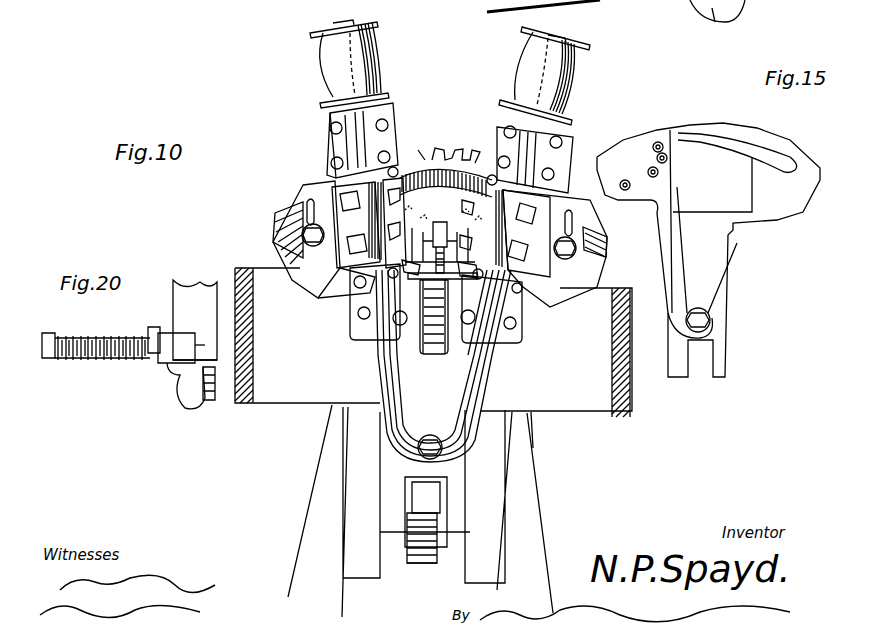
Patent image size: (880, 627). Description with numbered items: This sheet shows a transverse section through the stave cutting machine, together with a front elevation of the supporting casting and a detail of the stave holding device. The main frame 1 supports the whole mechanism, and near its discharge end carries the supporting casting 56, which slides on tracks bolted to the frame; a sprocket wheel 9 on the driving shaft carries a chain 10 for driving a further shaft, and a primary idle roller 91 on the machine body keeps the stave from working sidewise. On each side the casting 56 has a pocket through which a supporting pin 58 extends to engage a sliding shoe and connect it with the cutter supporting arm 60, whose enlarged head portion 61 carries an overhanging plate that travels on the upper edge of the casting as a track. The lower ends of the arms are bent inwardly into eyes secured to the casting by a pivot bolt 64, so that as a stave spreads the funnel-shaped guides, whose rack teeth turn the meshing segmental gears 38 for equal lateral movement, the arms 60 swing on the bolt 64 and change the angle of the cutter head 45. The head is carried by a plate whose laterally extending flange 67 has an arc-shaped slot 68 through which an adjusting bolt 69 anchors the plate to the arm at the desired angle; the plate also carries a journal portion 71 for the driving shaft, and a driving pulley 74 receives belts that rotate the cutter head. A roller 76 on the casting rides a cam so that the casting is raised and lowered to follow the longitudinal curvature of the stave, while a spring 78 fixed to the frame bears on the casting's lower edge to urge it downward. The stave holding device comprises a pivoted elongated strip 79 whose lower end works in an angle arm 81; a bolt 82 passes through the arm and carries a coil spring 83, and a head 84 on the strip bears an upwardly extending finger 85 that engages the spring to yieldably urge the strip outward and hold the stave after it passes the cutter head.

In FIG. 10, the main frame 1 is at (600, 330).
In FIG. 10, the sprocket wheel 9 is at (246, 2).
In FIG. 10, the chain 10 is at (296, 2).
In FIG. 10, the primary idle roller 91 is at (709, 31).
In FIG. 10, the segmental gears 38 is at (446, 145).
In FIG. 10, the cutter head 45 is at (378, 272).
In FIG. 10, the supporting casting 56 is at (458, 497).
In FIG. 15, the supporting casting 56 is at (725, 353).
In FIG. 15, the supporting pin 58 is at (667, 157).
In FIG. 10, the cutter supporting arm 60 is at (378, 382).
In FIG. 15, the cutter supporting arm 60 is at (675, 252).
In FIG. 15, the enlarged head portion 61 is at (667, 170).
In FIG. 10, the pivot bolt 64 is at (440, 456).
In FIG. 15, the pivot bolt 64 is at (710, 316).
In FIG. 10, the laterally extending flange 67 is at (300, 262).
In FIG. 10, the arc-shaped slot 68 is at (310, 200).
In FIG. 10, the adjusting bolt 69 is at (302, 232).
In FIG. 10, the journal portion 71 is at (343, 137).
In FIG. 10, the driving pulley 74 is at (348, 72).
In FIG. 10, the roller 76 is at (415, 565).
In FIG. 20, the spring 78 is at (202, 292).
In FIG. 10, the elongated strip 79 is at (446, 195).
In FIG. 20, the angle arm 81 is at (185, 340).
In FIG. 20, the bolt 82 is at (50, 360).
In FIG. 20, the coil spring 83 is at (120, 362).
In FIG. 10, the head 84 is at (395, 295).
In FIG. 20, the head 84 is at (192, 395).
In FIG. 10, the finger 85 is at (388, 283).
In FIG. 20, the finger 85 is at (152, 328).